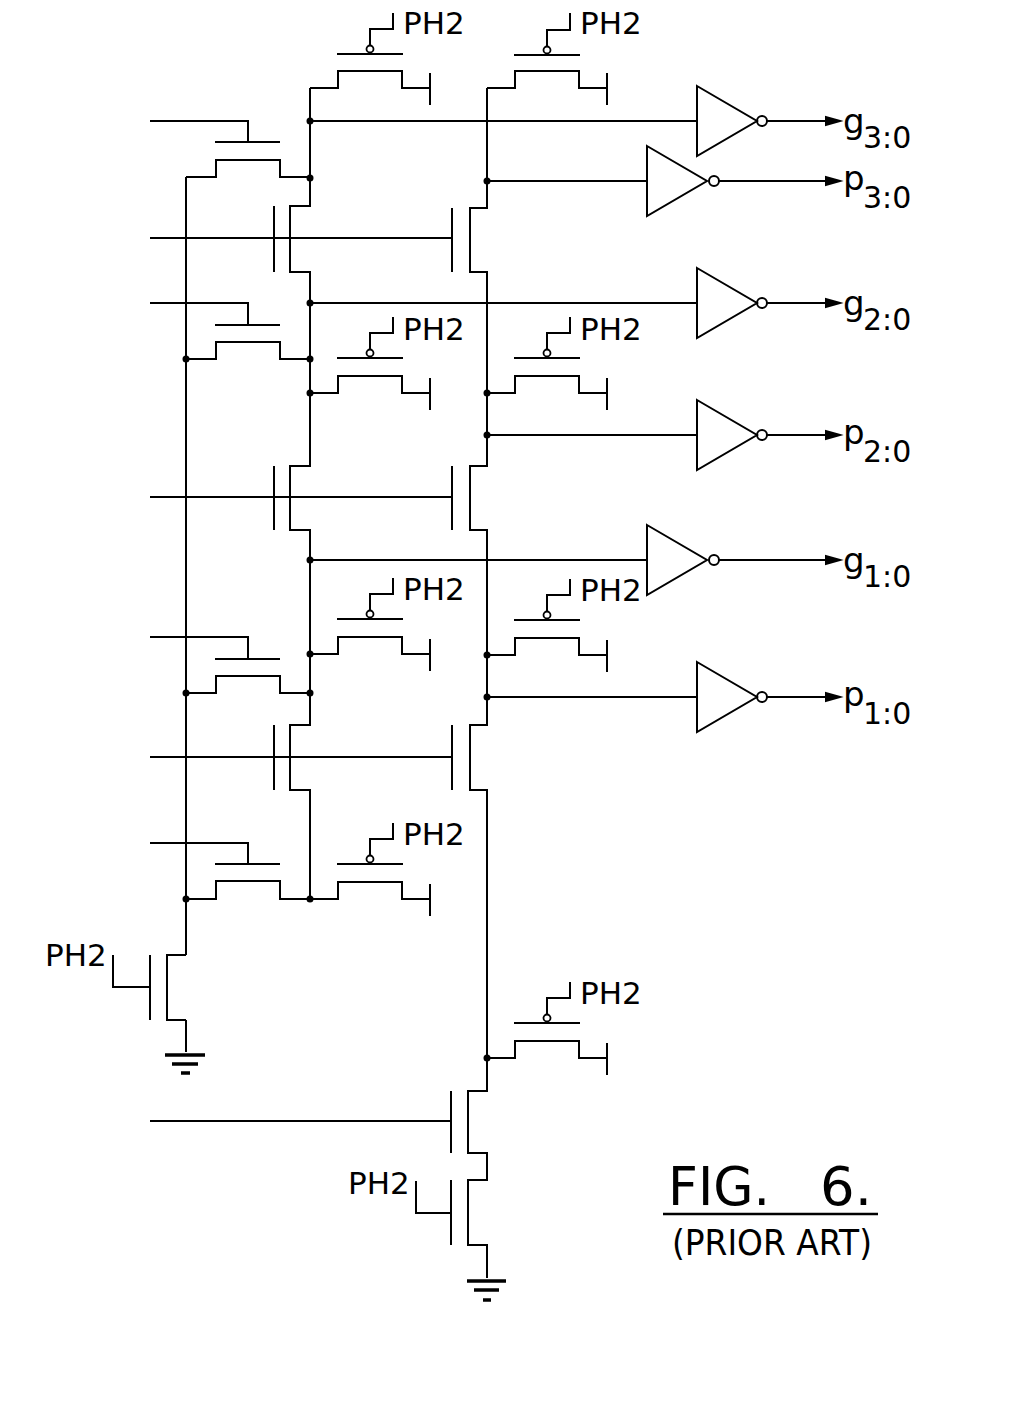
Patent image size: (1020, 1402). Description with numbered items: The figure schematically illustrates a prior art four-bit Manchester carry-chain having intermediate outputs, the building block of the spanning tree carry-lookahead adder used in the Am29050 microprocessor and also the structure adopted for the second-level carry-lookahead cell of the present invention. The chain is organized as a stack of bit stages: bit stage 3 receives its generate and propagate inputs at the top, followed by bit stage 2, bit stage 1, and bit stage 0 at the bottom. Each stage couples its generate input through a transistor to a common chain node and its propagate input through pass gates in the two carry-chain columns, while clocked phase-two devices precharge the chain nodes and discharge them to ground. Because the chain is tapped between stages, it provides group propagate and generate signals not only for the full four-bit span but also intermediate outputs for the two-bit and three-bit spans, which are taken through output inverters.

The bit 3 generate/propagate input stage (g3 transistor and p3 pass gates) 3 is at (281, 186).
The bit 2 generate/propagate input stage (g2 transistor and p2 pass gates) 2 is at (281, 406).
The bit 1 generate/propagate input stage (g1 transistor and p1 pass gates) 1 is at (281, 703).
The bit 0 generate/propagate input stage (g0 transistor and p0 transistor) 0 is at (280, 987).